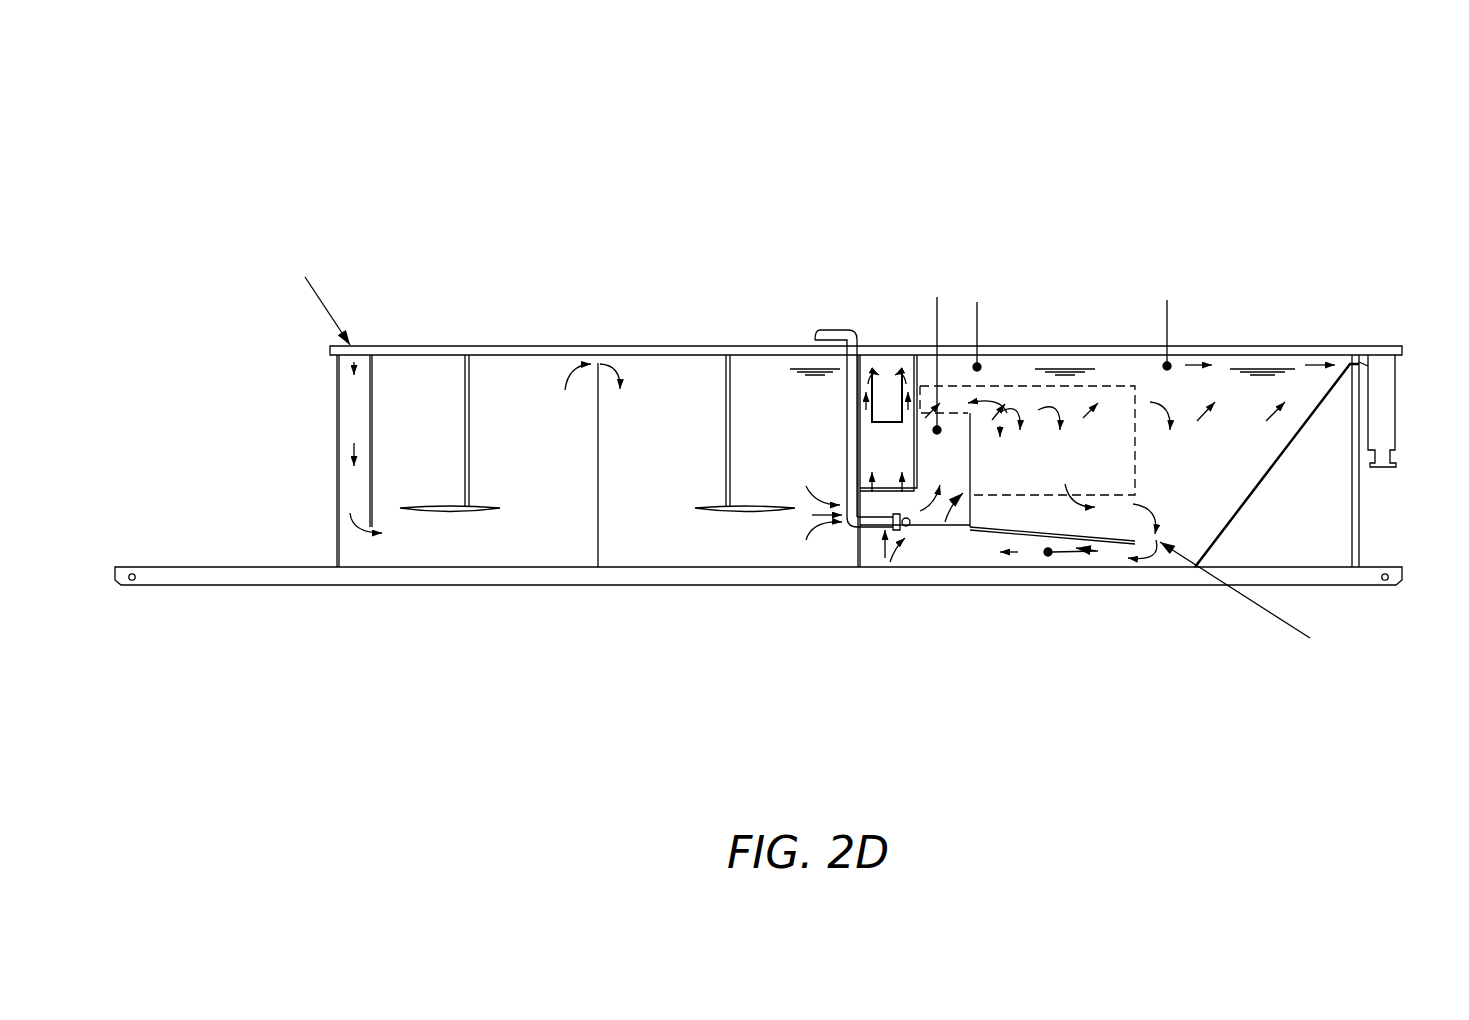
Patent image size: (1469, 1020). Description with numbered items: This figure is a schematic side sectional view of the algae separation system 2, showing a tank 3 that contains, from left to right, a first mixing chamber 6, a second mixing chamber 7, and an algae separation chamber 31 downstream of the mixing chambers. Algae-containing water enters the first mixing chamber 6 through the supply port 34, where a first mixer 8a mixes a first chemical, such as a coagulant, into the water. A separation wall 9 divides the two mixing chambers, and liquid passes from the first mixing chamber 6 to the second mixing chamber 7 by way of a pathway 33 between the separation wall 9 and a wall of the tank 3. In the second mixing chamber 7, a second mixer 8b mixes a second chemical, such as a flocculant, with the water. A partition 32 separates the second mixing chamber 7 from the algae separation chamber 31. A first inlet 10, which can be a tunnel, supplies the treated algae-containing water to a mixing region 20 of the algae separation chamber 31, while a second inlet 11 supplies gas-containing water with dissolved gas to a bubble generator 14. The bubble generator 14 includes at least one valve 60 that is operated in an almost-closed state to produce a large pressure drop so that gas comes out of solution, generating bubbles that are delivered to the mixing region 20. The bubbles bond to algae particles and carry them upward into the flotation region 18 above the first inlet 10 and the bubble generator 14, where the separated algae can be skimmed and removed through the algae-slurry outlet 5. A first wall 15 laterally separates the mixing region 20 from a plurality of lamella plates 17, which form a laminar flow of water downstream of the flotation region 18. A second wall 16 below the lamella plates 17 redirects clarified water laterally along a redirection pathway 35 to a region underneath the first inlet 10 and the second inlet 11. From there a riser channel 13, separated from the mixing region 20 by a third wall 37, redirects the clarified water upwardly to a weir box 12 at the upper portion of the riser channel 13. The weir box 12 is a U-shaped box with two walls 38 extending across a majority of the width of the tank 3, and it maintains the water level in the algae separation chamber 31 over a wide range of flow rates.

The algae separation system 2 is at (232, 96).
The tank 3 is at (418, 347).
The algae-slurry outlet 5 is at (1389, 470).
The first mixing chamber 6 is at (410, 430).
The second mixing chamber 7 is at (666, 430).
The first mixer 8a is at (466, 512).
The second mixer 8b is at (727, 512).
The separation wall 9 is at (598, 397).
The first inlet 10 is at (838, 534).
The second inlet 11 is at (805, 337).
The weir box 12 is at (887, 372).
The riser channel 13 is at (911, 386).
The bubble generator 14 is at (906, 535).
The first wall 15 is at (950, 530).
The second wall 16 is at (1092, 554).
The lamella plates 17 is at (1078, 410).
The flotation region 18 is at (1190, 396).
The mixing region 20 is at (932, 470).
The algae separation chamber 31 is at (1188, 580).
The partition 32 is at (861, 553).
The pathway 33 is at (598, 358).
The supply port 34 is at (345, 338).
The redirection pathway 35 is at (1015, 554).
The third wall 37 is at (908, 455).
The walls 38 is at (866, 387).
The valve 60 is at (850, 528).